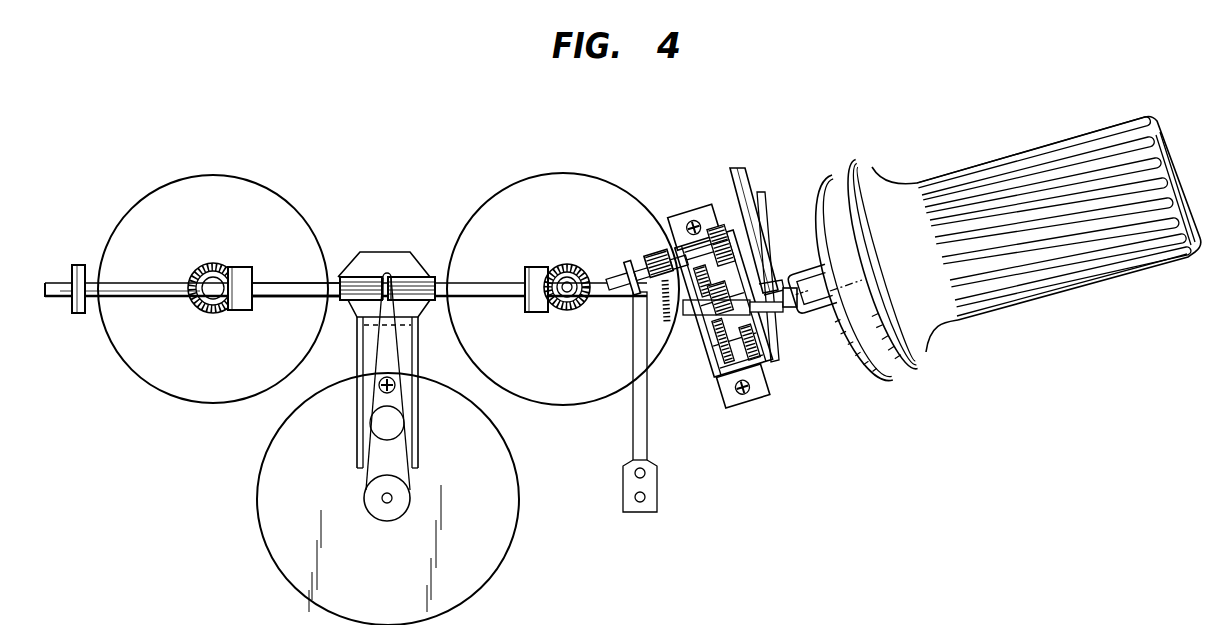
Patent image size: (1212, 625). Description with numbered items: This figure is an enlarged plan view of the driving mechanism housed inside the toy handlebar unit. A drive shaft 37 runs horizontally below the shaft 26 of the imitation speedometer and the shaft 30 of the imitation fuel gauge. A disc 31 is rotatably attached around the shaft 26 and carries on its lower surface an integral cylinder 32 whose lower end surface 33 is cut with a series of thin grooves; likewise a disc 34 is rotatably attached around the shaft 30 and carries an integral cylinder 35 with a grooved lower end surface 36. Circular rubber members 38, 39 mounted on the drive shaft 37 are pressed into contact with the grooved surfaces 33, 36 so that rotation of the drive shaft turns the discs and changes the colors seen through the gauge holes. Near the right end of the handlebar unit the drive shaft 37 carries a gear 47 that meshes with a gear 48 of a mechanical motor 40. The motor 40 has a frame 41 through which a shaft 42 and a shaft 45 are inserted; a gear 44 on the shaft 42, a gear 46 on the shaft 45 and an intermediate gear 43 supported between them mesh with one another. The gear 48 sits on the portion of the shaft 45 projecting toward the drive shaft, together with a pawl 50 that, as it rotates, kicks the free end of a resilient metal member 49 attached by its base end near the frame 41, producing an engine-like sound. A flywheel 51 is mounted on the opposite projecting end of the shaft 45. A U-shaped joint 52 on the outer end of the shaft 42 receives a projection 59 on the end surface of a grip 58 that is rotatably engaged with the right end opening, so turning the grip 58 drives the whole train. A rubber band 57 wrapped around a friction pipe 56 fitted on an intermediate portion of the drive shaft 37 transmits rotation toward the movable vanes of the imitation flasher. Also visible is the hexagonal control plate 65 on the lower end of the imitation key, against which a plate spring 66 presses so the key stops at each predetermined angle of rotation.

The shaft 26 is at (205, 283).
The shaft 30 is at (568, 264).
The disc 31 is at (226, 175).
The cylinder 32 is at (213, 263).
The lower end surface 33 is at (210, 312).
The disc 34 is at (528, 175).
The cylinder 35 is at (548, 268).
The lower end surface 36 is at (562, 310).
The drive shaft 37 is at (270, 298).
The circular rubber member 38 is at (250, 280).
The circular rubber member 39 is at (528, 296).
The motor 40 is at (700, 385).
The frame 41 is at (748, 385).
The shaft 42 is at (778, 306).
The gear 43 is at (737, 262).
The gear 44 is at (748, 402).
The shaft 45 is at (624, 292).
The gear 46 is at (705, 218).
The gear 47 is at (678, 300).
The gear 48 is at (655, 260).
The resilient metal member 49 is at (633, 426).
The pawl 50 is at (662, 308).
The flywheel 51 is at (738, 168).
The U-shaped joint 52 is at (810, 272).
The friction pipe 56 is at (404, 277).
The rubber band 57 is at (360, 452).
The grip 58 is at (1018, 155).
The projection 59 is at (833, 310).
The hexagonal control plate 65 is at (370, 252).
The plate spring 66 is at (418, 416).